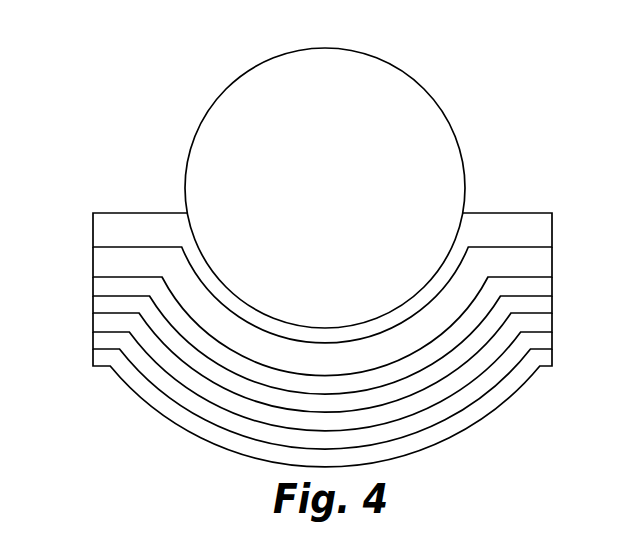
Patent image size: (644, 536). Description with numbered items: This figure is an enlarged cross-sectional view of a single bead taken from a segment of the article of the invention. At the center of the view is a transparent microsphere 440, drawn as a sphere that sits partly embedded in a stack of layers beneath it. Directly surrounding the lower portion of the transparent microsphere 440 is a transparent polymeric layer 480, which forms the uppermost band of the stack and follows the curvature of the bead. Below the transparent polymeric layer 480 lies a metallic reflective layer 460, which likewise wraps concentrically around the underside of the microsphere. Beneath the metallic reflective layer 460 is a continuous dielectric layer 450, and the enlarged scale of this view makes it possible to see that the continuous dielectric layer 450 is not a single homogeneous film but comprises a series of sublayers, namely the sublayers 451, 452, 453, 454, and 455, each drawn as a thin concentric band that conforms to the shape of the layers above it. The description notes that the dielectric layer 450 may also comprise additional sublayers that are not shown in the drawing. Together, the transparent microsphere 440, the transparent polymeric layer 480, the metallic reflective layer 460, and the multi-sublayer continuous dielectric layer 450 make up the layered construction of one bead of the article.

The transparent microsphere 440 is at (427, 115).
The transparent polymeric layer 480 is at (497, 223).
The metallic reflective layer 460 is at (102, 263).
The continuous dielectric layer 450 is at (88, 278).
The sublayer 451 is at (547, 290).
The sublayer 452 is at (544, 305).
The sublayer 453 is at (545, 322).
The sublayer 454 is at (545, 338).
The sublayer 455 is at (517, 382).